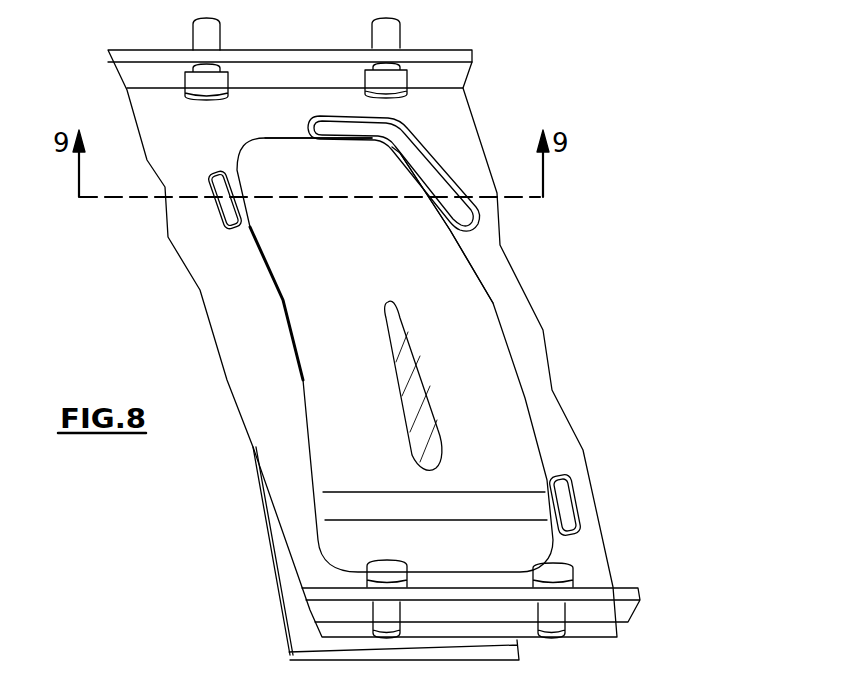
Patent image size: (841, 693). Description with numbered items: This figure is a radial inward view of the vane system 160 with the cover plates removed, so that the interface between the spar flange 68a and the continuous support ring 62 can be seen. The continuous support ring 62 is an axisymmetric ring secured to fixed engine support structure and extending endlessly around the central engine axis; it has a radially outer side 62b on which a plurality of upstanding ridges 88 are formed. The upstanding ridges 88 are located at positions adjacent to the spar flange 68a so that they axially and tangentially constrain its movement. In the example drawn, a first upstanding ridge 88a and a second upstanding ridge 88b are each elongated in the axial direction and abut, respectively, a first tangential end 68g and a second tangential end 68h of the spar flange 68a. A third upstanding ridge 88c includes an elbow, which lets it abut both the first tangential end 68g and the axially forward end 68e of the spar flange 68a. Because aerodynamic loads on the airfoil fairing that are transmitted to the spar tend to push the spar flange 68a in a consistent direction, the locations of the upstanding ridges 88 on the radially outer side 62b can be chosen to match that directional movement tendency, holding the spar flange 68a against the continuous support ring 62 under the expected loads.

The vane system 160 is at (424, 335).
The continuous support ring 62 is at (378, 328).
The radially outer side 62b is at (547, 407).
The spar flange 68a is at (510, 450).
The axially forward end 68e is at (297, 138).
The first tangential end 68g is at (493, 303).
The second tangential end 68h is at (316, 478).
The upstanding ridges 88 is at (393, 324).
The first upstanding ridge 88a is at (567, 513).
The second upstanding ridge 88b is at (228, 210).
The third upstanding ridge 88c is at (412, 147).